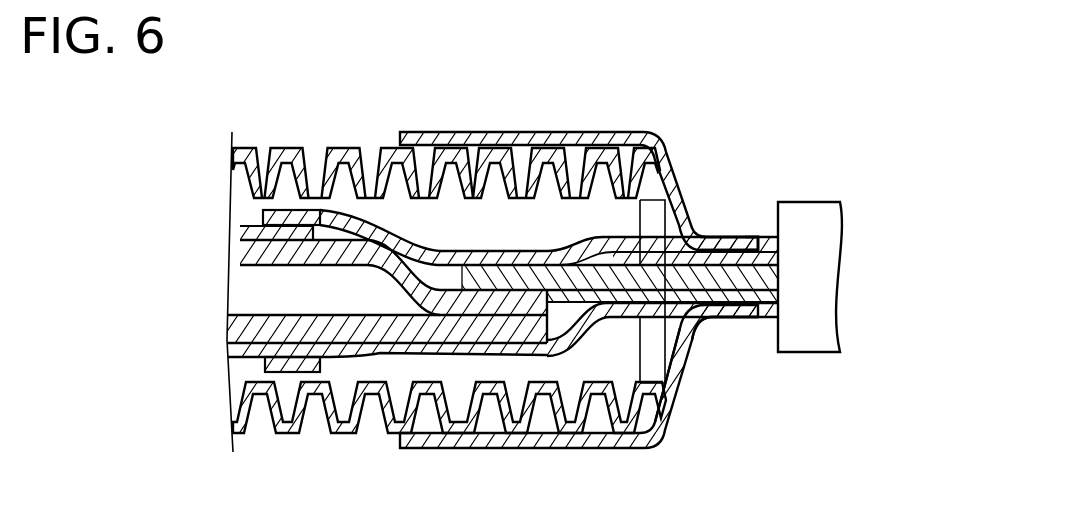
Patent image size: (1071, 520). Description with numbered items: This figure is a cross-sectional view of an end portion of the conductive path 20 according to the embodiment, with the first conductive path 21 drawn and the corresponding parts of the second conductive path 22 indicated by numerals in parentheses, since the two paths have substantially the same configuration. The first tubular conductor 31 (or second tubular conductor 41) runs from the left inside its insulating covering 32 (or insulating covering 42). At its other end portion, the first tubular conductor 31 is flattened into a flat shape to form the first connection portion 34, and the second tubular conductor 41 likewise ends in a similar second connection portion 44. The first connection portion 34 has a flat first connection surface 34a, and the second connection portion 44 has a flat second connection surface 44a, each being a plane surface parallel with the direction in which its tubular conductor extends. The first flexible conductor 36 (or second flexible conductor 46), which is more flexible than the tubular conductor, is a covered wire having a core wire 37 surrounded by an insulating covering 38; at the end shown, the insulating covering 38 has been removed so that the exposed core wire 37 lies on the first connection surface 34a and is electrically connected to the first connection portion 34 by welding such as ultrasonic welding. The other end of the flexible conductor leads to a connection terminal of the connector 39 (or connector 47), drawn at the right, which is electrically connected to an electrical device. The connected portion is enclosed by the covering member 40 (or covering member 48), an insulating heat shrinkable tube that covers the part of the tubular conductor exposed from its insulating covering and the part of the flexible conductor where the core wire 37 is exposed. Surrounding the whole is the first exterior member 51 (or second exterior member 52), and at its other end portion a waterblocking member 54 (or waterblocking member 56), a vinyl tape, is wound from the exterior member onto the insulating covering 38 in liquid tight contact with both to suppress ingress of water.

The conductive path 20 is at (695, 87).
The first conductive path 21 is at (447, 416).
The second conductive path 22 is at (327, 362).
The first tubular conductor 31 is at (449, 328).
The second tubular conductor 41 is at (256, 356).
The insulating covering 32 is at (459, 257).
The insulating covering 42 is at (252, 222).
The first connection portion 34 is at (579, 355).
The second connection portion 44 is at (480, 436).
The first connection surface 34a is at (549, 237).
The second connection surface 44a is at (492, 264).
The first flexible conductor 36 is at (706, 364).
The second flexible conductor 46 is at (727, 307).
The core wire 37 is at (712, 244).
The insulating covering 38 is at (768, 246).
The connector 39 is at (834, 253).
The connector 47 is at (814, 208).
The covering member 40 is at (662, 340).
The covering member 48 is at (593, 343).
The first exterior member 51 is at (446, 147).
The second exterior member 52 is at (290, 150).
The waterblocking member 54 is at (579, 167).
The waterblocking member 56 is at (529, 133).